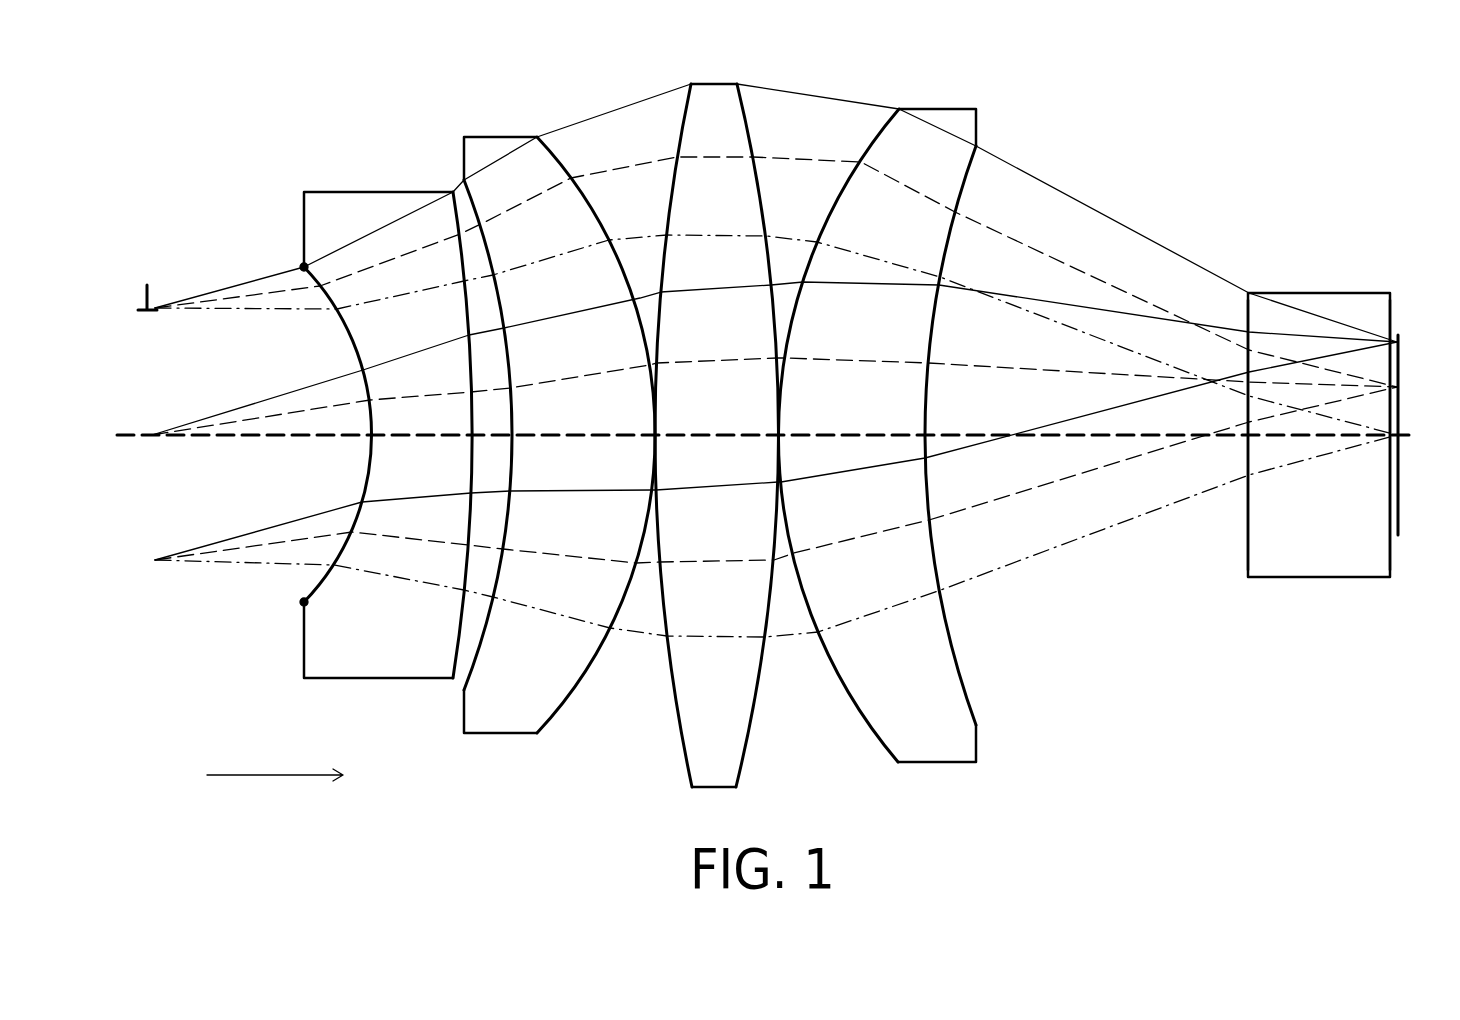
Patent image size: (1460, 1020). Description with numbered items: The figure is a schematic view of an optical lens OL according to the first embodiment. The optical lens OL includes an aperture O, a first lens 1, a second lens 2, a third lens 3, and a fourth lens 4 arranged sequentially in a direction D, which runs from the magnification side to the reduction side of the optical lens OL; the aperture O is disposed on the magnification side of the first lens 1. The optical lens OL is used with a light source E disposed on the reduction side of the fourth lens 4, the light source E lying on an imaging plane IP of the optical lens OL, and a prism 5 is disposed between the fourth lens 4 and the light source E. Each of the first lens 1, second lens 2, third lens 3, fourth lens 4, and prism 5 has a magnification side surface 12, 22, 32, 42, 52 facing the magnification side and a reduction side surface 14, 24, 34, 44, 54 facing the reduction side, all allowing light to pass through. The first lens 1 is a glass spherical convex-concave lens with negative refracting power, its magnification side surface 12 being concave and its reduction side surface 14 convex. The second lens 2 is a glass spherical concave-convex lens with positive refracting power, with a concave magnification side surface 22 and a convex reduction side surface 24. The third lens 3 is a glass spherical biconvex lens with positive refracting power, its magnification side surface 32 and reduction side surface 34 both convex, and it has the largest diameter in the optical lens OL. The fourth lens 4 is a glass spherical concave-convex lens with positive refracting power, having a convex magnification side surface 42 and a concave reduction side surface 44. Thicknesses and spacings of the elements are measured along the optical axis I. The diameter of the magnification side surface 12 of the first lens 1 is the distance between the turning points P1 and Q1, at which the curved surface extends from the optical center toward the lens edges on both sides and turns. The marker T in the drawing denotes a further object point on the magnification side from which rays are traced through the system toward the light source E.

The optical lens OL is at (1203, 122).
The first lens 1 is at (349, 417).
The second lens 2 is at (559, 418).
The third lens 3 is at (716, 413).
The fourth lens 4 is at (877, 436).
The prism 5 is at (1319, 427).
The magnification side surface of the first lens 12 is at (349, 561).
The reduction side surface of the first lens 14 is at (463, 583).
The magnification side surface of the second lens 22 is at (496, 597).
The reduction side surface of the second lens 24 is at (612, 623).
The magnification side surface of the third lens 32 is at (677, 628).
The reduction side surface of the third lens 34 is at (763, 632).
The magnification side surface of the fourth lens 42 is at (822, 612).
The reduction side surface of the fourth lens 44 is at (936, 590).
The magnification side surface of the prism 52 is at (1260, 559).
The reduction side surface of the prism 54 is at (1386, 563).
The light source E is at (1375, 519).
The imaging plane IP is at (1393, 506).
The aperture O is at (142, 294).
The optical axis I is at (132, 434).
The object point T is at (147, 587).
The turning point P1 is at (295, 251).
The turning point Q1 is at (295, 620).
The direction D is at (275, 793).